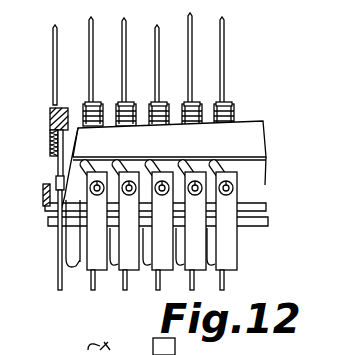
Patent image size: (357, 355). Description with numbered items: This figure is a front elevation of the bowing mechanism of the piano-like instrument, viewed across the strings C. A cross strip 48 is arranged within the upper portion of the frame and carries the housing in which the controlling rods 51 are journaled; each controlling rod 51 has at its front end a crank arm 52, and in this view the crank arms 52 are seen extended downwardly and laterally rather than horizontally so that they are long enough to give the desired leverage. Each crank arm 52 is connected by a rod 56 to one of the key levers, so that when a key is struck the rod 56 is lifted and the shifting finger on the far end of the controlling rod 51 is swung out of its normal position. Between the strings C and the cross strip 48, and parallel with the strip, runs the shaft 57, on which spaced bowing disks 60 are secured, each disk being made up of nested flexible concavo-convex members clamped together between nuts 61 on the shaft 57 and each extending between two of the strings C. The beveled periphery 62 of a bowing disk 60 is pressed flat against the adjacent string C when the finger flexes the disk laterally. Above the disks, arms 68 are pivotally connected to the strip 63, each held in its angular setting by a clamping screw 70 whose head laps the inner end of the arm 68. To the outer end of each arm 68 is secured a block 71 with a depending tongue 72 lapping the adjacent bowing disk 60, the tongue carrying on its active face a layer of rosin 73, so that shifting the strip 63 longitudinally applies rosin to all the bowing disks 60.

The strings C is at (53, 42).
The cross strip 48 is at (57, 231).
The controlling rods 51 is at (150, 167).
The crank arm 52 is at (215, 172).
The rod 56 is at (44, 200).
The shaft 57 is at (48, 215).
The bowing disks 60 is at (70, 262).
The nuts 61 is at (57, 178).
The beveled periphery 62 is at (135, 336).
The strip 63 is at (182, 346).
The arms 68 is at (234, 106).
The clamping screw 70 is at (90, 106).
The block 71 is at (48, 108).
The depending tongue 72 is at (50, 145).
The layer of rosin 73 is at (49, 129).